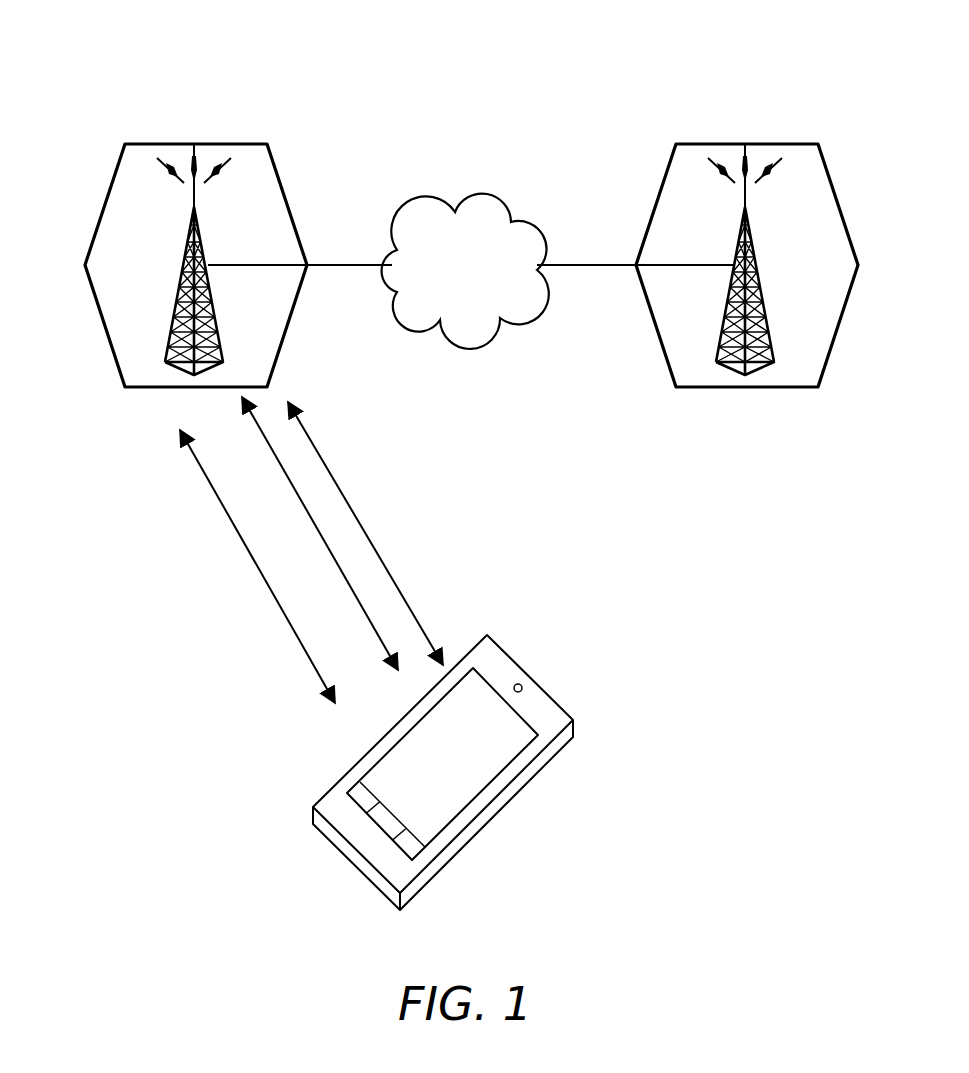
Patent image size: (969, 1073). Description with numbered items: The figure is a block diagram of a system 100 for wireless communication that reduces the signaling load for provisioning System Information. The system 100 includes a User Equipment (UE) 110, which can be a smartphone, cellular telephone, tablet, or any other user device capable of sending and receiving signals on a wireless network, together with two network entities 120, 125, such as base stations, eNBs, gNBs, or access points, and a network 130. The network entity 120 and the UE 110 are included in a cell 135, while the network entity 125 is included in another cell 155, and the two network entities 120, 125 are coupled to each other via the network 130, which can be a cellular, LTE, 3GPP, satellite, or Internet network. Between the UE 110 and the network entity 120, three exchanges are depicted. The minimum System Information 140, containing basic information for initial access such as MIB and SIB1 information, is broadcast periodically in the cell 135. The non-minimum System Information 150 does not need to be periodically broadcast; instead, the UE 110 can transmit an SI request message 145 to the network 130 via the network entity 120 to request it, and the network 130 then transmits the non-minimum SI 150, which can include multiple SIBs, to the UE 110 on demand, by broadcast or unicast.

The system 100 is at (782, 61).
The User Equipment (UE) 110 is at (573, 720).
The network entity 120 is at (184, 247).
The network entity 125 is at (757, 252).
The network 130 is at (455, 208).
The cell 135 is at (100, 219).
The minimum System Information (SI) 140 is at (257, 565).
The SI request message 145 is at (325, 542).
The non-minimum System Information (SI) 150 is at (355, 510).
The cell 155 is at (847, 301).